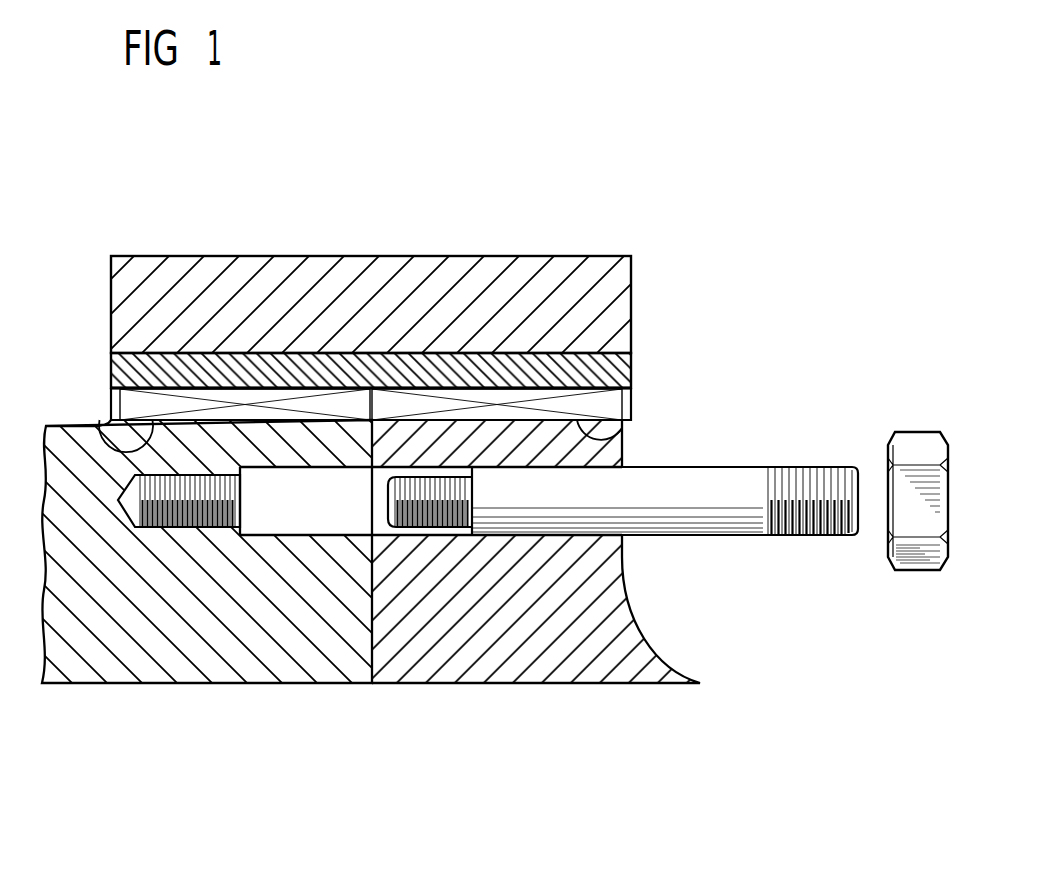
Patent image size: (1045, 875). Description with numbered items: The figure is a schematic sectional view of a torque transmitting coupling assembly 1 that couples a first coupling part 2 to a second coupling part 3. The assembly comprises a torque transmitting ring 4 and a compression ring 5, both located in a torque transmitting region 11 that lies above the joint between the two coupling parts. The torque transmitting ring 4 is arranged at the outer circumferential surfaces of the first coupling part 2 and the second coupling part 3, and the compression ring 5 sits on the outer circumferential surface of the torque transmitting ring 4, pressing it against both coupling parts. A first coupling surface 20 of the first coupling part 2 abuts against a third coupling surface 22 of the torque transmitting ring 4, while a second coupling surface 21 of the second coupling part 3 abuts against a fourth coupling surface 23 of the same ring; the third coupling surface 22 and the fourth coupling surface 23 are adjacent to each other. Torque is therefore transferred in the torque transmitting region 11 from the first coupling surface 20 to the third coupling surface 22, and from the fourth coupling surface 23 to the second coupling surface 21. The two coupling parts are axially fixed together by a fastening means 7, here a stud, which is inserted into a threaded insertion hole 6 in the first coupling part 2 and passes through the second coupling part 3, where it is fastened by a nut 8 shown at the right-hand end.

The torque transmitting coupling assembly 1 is at (686, 249).
The torque transmitting region 11 is at (430, 236).
The compression ring 5 is at (176, 287).
The torque transmitting ring 4 is at (266, 372).
The third coupling surface 22 is at (148, 390).
The fourth coupling surface 23 is at (589, 388).
The first coupling surface 20 is at (122, 450).
The second coupling surface 21 is at (602, 441).
The first coupling part 2 is at (201, 645).
The second coupling part 3 is at (528, 645).
The threaded insertion hole 6 is at (283, 517).
The fastening means 7 is at (745, 478).
The nut 8 is at (920, 447).